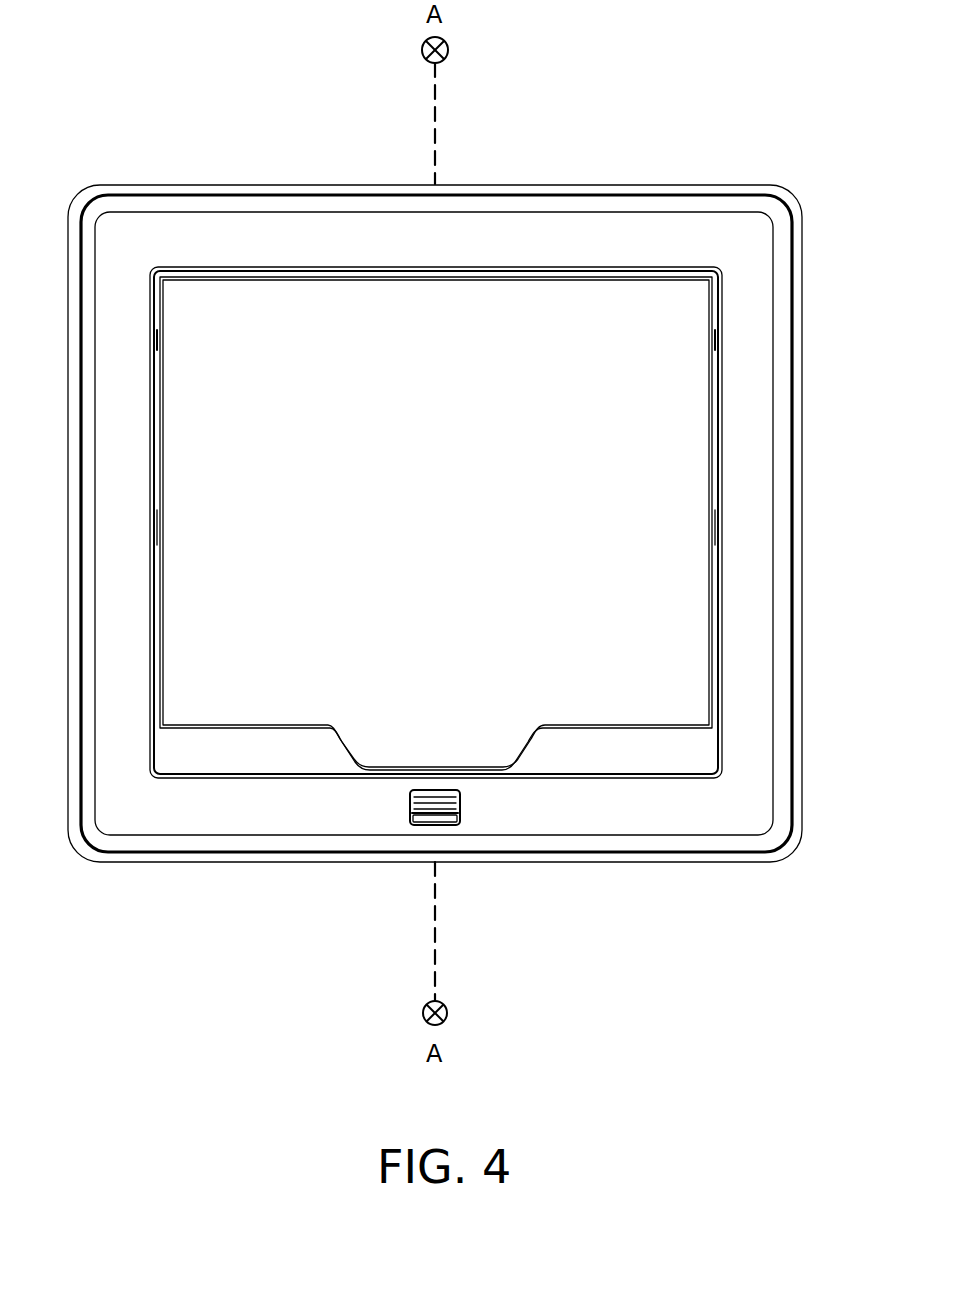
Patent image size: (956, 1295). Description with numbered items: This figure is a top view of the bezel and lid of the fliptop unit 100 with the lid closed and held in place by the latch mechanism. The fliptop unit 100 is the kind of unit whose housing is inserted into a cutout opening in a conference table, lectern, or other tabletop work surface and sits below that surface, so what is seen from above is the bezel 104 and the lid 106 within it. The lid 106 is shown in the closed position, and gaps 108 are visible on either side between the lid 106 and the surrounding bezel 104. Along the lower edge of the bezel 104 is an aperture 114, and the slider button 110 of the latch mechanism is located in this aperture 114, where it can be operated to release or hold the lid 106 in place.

The fliptop unit 100 is at (244, 107).
The bezel 104 is at (638, 187).
The lid 106 is at (438, 382).
The gaps 108 is at (252, 750).
The slider button 110 is at (437, 810).
The aperture 114 is at (415, 825).